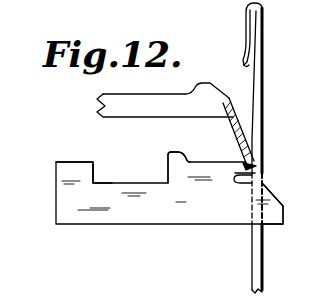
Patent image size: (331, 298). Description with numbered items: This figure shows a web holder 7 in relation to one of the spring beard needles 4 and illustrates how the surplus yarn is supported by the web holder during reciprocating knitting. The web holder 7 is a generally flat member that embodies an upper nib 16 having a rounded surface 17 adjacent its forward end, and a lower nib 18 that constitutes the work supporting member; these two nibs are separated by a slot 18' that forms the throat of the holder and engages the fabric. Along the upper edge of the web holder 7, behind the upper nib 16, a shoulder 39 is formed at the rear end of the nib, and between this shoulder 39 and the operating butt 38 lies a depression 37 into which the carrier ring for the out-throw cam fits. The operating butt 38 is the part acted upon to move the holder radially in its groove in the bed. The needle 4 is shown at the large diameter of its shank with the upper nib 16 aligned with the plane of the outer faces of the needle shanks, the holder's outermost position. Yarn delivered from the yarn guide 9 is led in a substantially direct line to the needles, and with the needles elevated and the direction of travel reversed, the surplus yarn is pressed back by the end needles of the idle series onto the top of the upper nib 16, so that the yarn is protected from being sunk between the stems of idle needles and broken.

The spring beard needle 4 is at (253, 258).
The web holder 7 is at (152, 213).
The yarn guide 9 is at (97, 105).
The upper nib 16 is at (236, 170).
The rounded surface 17 is at (256, 166).
The lower nib 18 is at (285, 204).
The slot 18' is at (228, 191).
The depression 37 is at (104, 173).
The operating butt 38 is at (65, 173).
The shoulder 39 is at (168, 163).